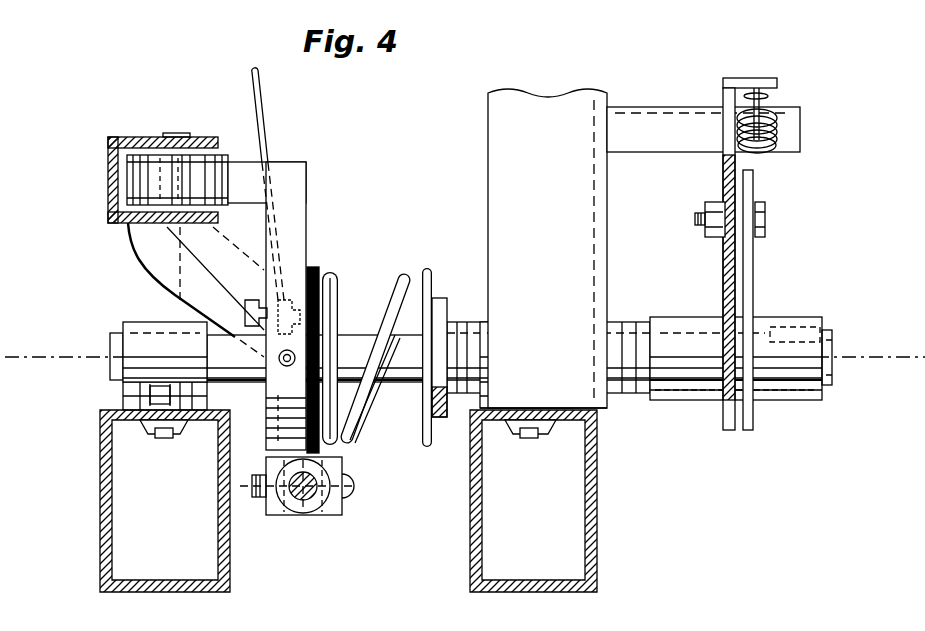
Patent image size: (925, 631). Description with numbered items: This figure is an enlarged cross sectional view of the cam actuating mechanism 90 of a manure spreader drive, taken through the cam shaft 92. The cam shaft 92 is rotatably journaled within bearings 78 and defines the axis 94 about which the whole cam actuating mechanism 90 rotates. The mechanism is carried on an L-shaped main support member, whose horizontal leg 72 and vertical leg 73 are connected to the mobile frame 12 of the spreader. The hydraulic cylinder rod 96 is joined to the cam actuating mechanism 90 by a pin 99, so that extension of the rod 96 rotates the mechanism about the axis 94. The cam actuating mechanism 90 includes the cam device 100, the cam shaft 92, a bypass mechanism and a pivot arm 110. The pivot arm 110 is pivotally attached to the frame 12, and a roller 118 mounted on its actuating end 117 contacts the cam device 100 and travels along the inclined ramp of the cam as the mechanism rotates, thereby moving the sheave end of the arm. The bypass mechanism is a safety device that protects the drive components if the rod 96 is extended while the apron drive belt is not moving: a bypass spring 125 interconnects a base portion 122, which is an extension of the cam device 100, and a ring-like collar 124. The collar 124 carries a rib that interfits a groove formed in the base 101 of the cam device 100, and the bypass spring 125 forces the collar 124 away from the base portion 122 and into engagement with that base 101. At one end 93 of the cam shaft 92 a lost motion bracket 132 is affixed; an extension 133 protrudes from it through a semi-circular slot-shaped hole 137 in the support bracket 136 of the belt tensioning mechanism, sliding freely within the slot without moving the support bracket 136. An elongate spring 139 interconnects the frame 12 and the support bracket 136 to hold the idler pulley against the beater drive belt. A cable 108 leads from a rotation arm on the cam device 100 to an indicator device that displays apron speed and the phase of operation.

The mobile frame 12 is at (100, 488).
The horizontal leg 72 is at (597, 498).
The vertical leg 73 is at (488, 164).
The bearing 78 is at (147, 322).
The cam actuating mechanism 90 is at (372, 118).
The cam shaft 92 is at (252, 376).
The end 93 is at (836, 345).
The axis 94 is at (78, 357).
The hydraulic cylinder rod 96 is at (303, 500).
The pin 99 is at (355, 486).
The cam device 100 is at (100, 238).
The base 101 is at (296, 265).
The cable 108 is at (259, 92).
The pivot arm 110 is at (115, 137).
The actuating end 117 is at (108, 176).
The roller 118 is at (222, 155).
The base portion 122 is at (428, 268).
The collar 124 is at (319, 272).
The bypass spring 125 is at (400, 273).
The lost motion bracket 132 is at (753, 272).
The extension 133 is at (766, 216).
The support bracket 136 is at (723, 270).
The slot-shaped hole 137 is at (718, 212).
The elongate spring 139 is at (775, 152).